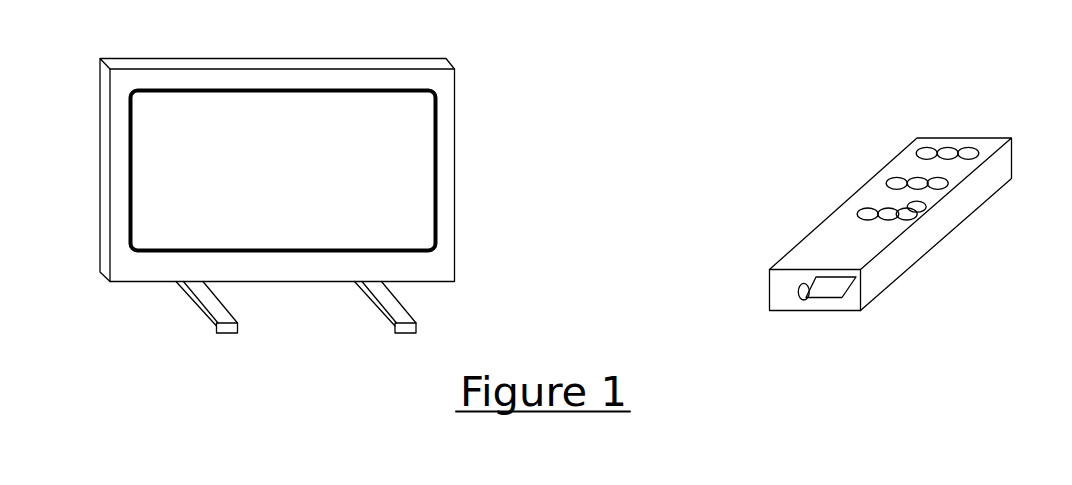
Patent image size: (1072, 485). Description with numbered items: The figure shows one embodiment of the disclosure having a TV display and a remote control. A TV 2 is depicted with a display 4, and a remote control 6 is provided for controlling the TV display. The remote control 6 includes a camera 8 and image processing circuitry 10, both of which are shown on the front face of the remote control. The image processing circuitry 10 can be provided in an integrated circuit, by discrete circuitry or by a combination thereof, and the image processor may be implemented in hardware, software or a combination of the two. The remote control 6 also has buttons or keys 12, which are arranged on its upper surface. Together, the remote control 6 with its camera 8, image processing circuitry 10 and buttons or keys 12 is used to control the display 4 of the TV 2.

The TV 2 is at (465, 116).
The display 4 is at (359, 230).
The remote control 6 is at (988, 137).
The camera 8 is at (797, 296).
The image processing circuitry 10 is at (833, 282).
The buttons or keys 12 is at (889, 182).